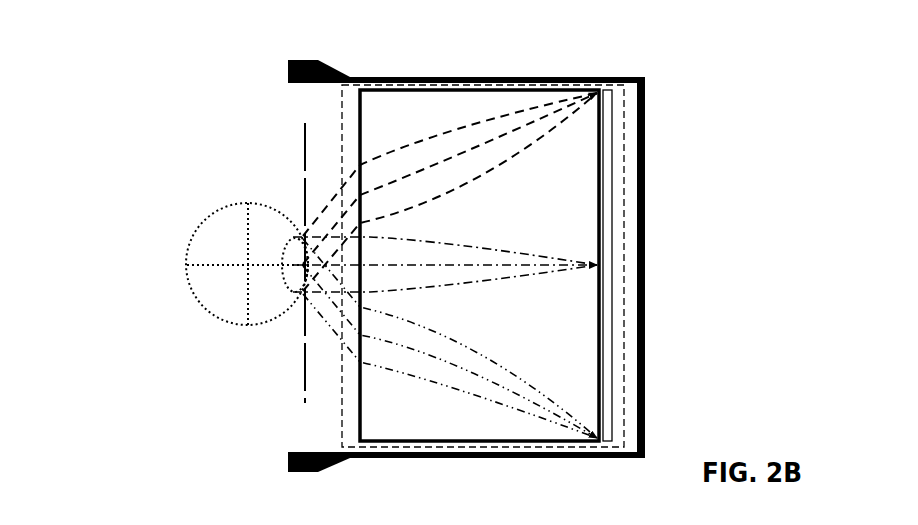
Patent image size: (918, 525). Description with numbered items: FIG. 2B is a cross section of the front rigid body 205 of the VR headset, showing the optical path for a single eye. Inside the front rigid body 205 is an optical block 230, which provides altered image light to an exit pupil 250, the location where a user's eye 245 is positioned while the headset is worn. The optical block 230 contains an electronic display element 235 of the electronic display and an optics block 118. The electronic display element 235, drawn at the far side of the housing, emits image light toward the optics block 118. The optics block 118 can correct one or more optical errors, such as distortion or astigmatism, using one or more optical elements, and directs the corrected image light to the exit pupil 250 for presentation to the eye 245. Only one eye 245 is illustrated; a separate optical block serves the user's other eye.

The optics block 118 is at (358, 140).
The front rigid body 205 is at (618, 74).
The optical block 230 is at (340, 368).
The electronic display element 235 is at (613, 193).
The eye 245 is at (217, 212).
The exit pupil 250 is at (295, 385).